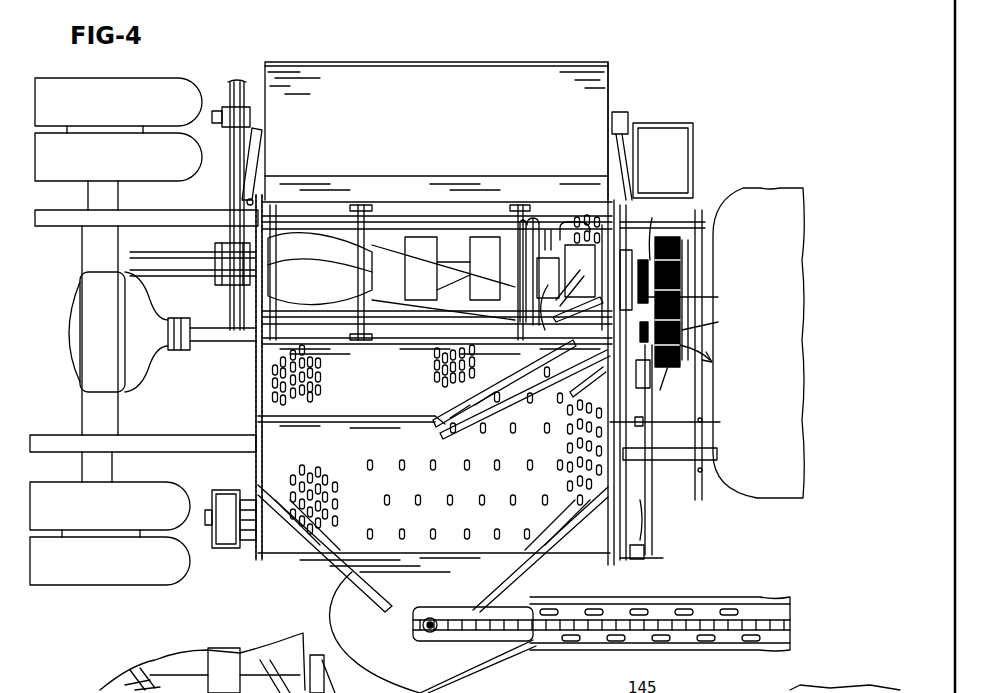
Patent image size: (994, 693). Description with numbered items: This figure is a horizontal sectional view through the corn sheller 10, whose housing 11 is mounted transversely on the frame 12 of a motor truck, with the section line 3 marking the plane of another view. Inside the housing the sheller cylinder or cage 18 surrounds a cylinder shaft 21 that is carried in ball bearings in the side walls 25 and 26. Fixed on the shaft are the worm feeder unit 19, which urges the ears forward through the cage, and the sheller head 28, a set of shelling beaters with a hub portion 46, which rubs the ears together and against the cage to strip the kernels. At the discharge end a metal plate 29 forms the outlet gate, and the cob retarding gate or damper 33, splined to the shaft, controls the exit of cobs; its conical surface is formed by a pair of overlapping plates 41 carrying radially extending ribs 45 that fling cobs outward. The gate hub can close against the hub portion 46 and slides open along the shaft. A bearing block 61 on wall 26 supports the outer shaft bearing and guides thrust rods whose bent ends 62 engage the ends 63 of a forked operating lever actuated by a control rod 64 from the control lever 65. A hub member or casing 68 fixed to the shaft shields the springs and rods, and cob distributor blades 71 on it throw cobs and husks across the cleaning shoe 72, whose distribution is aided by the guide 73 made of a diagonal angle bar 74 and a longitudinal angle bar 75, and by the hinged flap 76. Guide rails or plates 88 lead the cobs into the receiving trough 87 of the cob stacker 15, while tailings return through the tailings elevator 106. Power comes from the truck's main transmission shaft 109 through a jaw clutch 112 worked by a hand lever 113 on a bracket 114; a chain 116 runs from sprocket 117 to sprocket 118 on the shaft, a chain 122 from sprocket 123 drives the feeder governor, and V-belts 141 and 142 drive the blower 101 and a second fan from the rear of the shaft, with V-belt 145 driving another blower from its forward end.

The section line 3— 3 is at (607, 18).
The corn sheller 10 is at (263, 64).
The blower 101 is at (447, 72).
The V-belt 141 is at (232, 178).
The V-belt 142 is at (250, 237).
The cylinder shaft 21 is at (218, 262).
The sheller cylinder or cage 18 is at (380, 200).
The worm feeder unit 19 is at (302, 240).
The sheller head 28 is at (421, 236).
The hub portion of sheller head 46 is at (486, 236).
The radially extending ribs 45 is at (512, 220).
The metal plate 29 is at (538, 256).
The cob retarding gate or damper 33 is at (540, 222).
The overlapping plates 41 is at (555, 230).
The bearing block 61 is at (603, 222).
The cob distributor blades 71 is at (565, 225).
The hub member or casing 68 is at (556, 300).
The side wall 26 is at (600, 362).
The bent ends of thrust rods 62 is at (653, 198).
The ends of forked operating lever 63 is at (632, 258).
The sprocket 123 is at (667, 230).
The sprocket 118 is at (680, 250).
The chain 116 is at (695, 225).
The chain 122 is at (698, 297).
The V-belt 145 is at (716, 320).
The main transmission shaft 109 is at (713, 354).
The jaw clutch 112 is at (650, 360).
The sprocket 117 is at (678, 383).
The bracket 114 is at (655, 422).
The control rod 64 is at (652, 490).
The hand lever 113 is at (645, 540).
The control lever 65 is at (663, 562).
The cleaning shoe 72 is at (346, 401).
The angle bar 75 is at (345, 416).
The guide 73 is at (430, 405).
The angle bar 74 is at (500, 378).
The sheet metal vane or flap 76 is at (520, 400).
The guide rails or plates 88 is at (380, 595).
The cob stacker 15 is at (582, 650).
The receiving trough 87 is at (480, 650).
The tailings elevator 106 is at (228, 548).
The side wall 25 is at (255, 350).
The housing 11 is at (250, 375).
The frame 12 is at (232, 433).